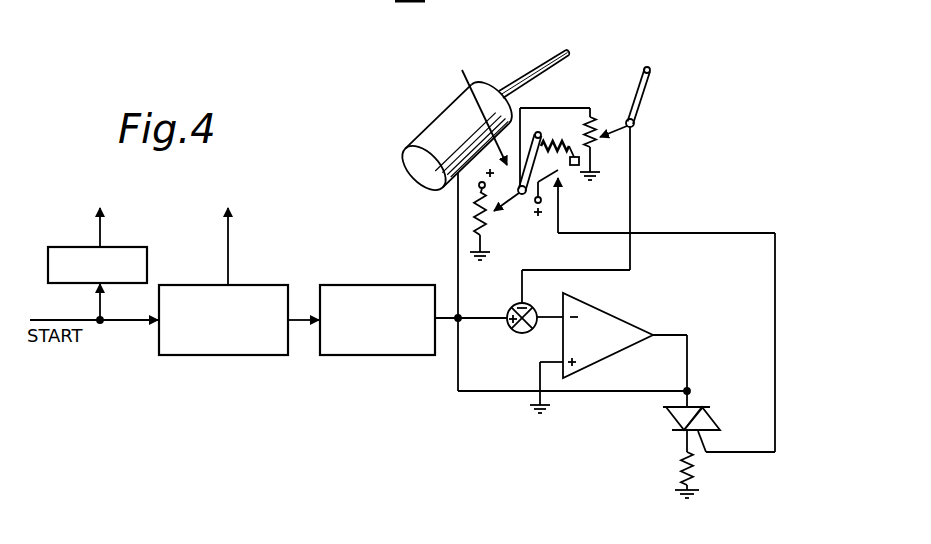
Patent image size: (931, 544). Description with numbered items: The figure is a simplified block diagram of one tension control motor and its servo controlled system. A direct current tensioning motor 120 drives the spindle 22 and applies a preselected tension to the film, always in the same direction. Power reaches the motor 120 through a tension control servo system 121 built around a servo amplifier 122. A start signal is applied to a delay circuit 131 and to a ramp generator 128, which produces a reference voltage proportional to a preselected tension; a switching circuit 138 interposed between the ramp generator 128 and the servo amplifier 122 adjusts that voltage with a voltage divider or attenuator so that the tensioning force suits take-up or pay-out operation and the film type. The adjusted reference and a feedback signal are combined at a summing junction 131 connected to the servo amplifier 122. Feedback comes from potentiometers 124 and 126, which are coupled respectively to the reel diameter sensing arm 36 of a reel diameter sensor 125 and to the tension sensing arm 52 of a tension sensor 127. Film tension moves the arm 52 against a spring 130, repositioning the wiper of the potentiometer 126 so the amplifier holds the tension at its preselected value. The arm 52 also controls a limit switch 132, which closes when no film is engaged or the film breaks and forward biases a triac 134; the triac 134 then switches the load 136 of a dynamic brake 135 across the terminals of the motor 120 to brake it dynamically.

The spindle 22 is at (530, 78).
The reel diameter sensing arm 36 is at (640, 108).
The tension sensing arm 52 is at (547, 182).
The tensioning motor 120 is at (457, 117).
The tension control servo system 121 is at (446, 397).
The servo amplifier 122 is at (610, 345).
The potentiometer 124 is at (602, 144).
The reel diameter sensor 125 is at (621, 103).
The potentiometer 126 is at (493, 218).
The tension sensor 127 is at (471, 107).
The ramp generator 128 is at (252, 285).
The spring 130 is at (544, 141).
The summing junction 131 is at (148, 247).
The limit switch 132 is at (561, 205).
The triac 134 is at (700, 410).
The dynamic brake 135 is at (702, 458).
The load 136 is at (679, 470).
The switching circuit 138 is at (377, 285).